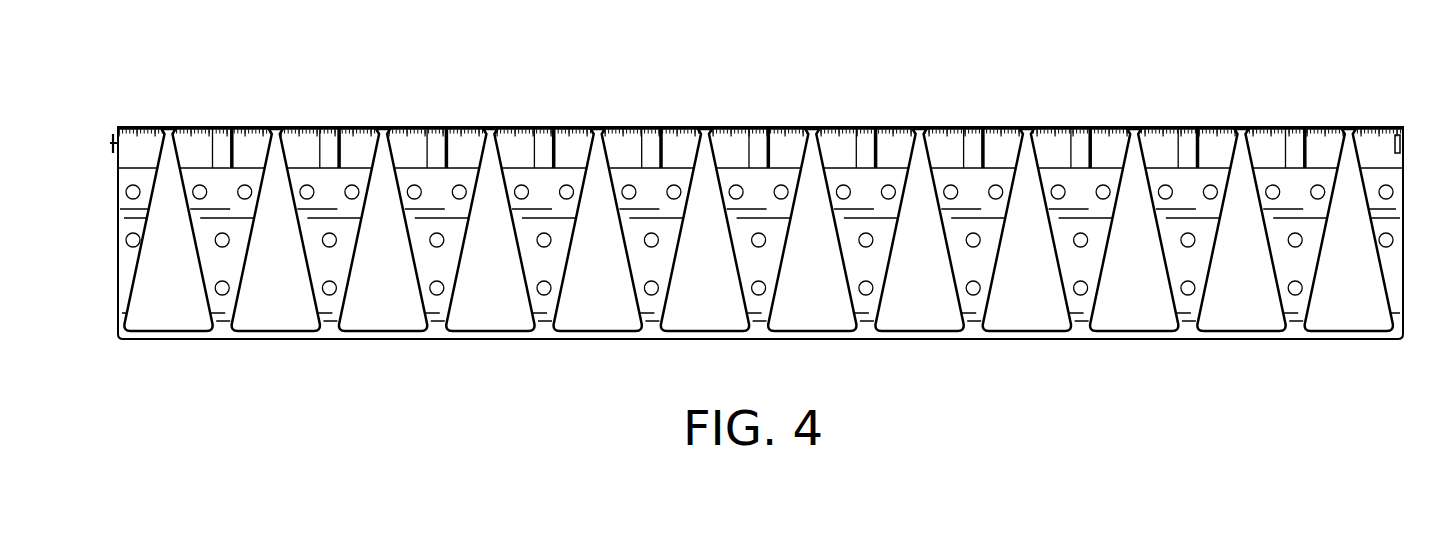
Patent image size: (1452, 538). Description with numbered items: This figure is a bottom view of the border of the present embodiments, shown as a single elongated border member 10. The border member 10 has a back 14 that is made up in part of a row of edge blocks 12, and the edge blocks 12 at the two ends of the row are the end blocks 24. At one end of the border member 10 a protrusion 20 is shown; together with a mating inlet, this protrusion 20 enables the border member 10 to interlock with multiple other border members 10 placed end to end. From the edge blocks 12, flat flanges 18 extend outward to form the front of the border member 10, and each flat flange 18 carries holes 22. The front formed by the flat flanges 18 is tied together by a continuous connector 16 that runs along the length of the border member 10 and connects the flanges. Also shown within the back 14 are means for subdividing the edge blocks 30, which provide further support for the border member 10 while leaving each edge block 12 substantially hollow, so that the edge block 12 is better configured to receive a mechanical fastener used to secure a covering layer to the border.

The border member 10 is at (742, 206).
The edge block 12 is at (188, 127).
The back 14 is at (705, 128).
The continuous connector 16 is at (921, 339).
The flat flange 18 is at (1077, 265).
The protrusion 20 is at (110, 141).
The hole 22 is at (434, 290).
The end block 24 is at (142, 147).
The means for subdividing the edge blocks 30 is at (877, 152).